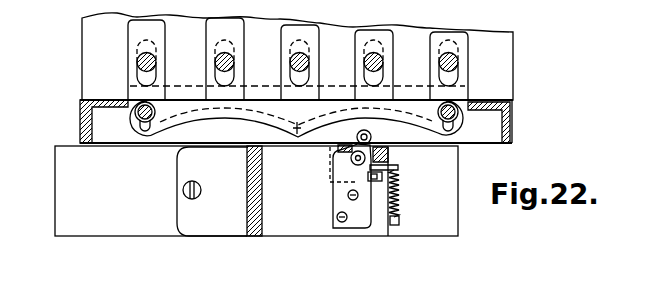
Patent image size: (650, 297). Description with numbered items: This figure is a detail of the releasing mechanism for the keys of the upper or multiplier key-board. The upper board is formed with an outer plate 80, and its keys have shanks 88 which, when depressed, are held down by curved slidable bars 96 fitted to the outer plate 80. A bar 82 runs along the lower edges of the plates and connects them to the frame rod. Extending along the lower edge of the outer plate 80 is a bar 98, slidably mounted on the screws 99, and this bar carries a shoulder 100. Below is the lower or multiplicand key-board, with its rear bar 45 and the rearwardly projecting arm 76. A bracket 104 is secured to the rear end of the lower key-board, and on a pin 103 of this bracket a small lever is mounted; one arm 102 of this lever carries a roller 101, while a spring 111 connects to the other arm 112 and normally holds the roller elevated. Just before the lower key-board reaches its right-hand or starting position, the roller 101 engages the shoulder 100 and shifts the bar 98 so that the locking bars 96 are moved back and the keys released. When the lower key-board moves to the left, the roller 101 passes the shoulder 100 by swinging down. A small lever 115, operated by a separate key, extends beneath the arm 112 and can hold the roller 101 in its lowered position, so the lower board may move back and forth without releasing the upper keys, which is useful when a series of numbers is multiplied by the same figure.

The outer plate 80 is at (296, 56).
The slidable bars 96 is at (206, 42).
The shanks 88 is at (215, 62).
The bar 82 is at (80, 123).
The bar 98 is at (264, 113).
The screws 99 is at (155, 108).
The shoulder 100 is at (305, 120).
The roller 101 is at (373, 139).
The arm 102 is at (344, 153).
The pin 103 is at (335, 165).
The bracket 104 is at (347, 173).
The spring 111 is at (396, 187).
The arm 112 is at (396, 160).
The small lever 115 is at (375, 181).
The rear bar 45 is at (256, 191).
The arm 76 is at (248, 216).